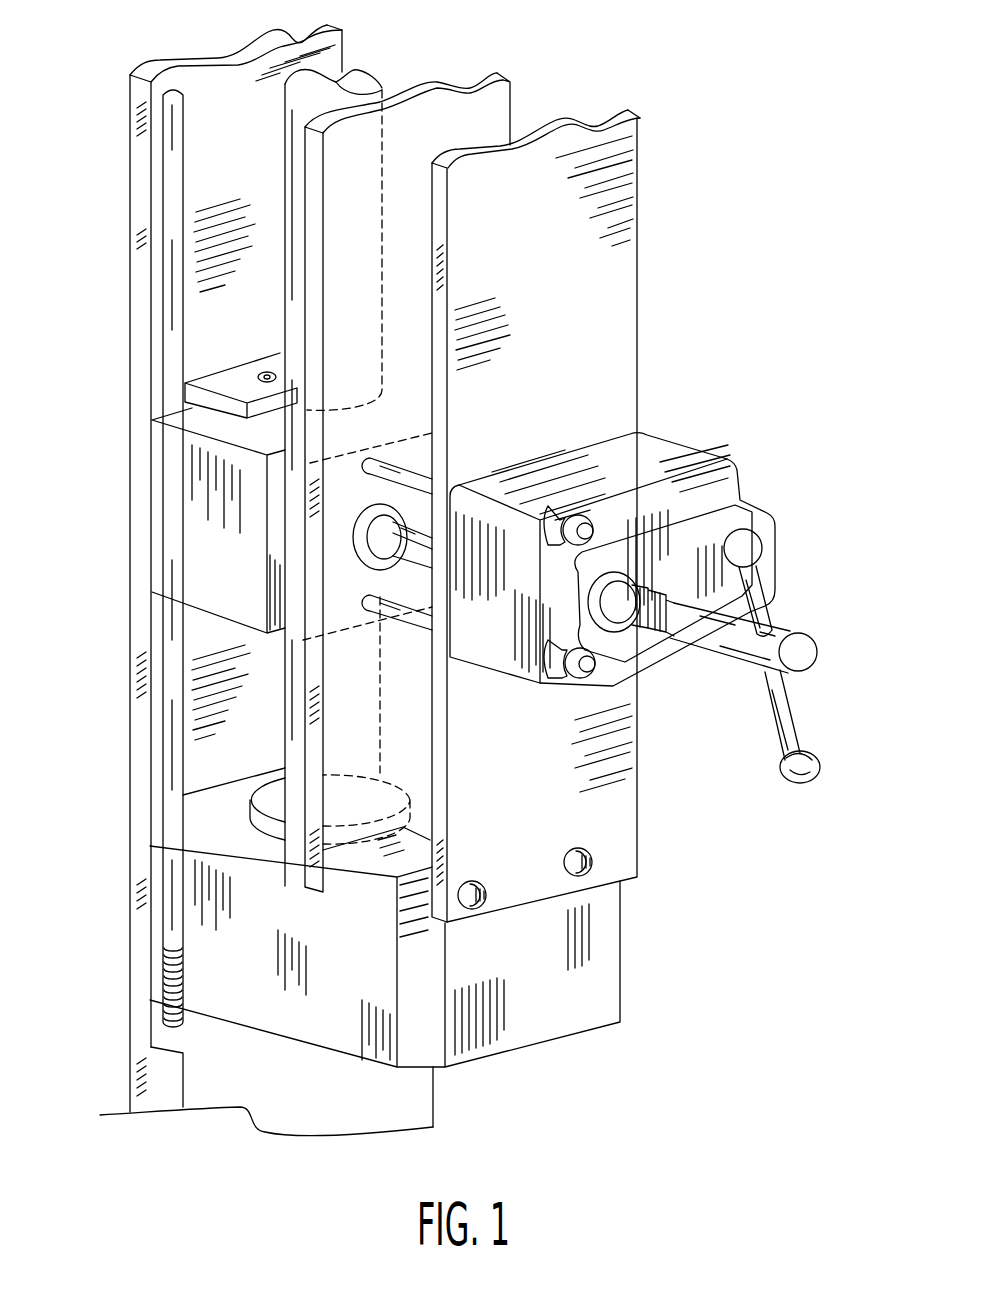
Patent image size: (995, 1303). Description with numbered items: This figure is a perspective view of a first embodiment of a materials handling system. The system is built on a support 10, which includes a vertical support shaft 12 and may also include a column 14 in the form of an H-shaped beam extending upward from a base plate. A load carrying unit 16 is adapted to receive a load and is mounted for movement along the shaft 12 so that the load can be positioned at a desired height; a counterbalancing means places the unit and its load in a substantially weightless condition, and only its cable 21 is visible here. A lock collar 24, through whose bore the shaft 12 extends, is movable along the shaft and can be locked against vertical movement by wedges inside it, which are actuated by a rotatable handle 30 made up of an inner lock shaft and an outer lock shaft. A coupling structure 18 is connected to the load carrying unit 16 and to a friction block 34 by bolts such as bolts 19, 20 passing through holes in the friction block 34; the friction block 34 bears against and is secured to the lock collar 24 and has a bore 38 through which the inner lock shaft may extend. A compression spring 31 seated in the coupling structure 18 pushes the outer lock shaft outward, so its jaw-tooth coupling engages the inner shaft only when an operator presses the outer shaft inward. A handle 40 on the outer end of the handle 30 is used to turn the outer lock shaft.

The support 10 is at (97, 245).
The vertical support shaft 12 is at (357, 80).
The column 14 is at (143, 292).
The load carrying unit 16 is at (672, 281).
The coupling structure 18 is at (643, 453).
The bolt 19 is at (440, 462).
The bolt 20 is at (405, 622).
The cable 21 is at (175, 127).
The lock collar 24 is at (215, 472).
The handle 30 is at (803, 658).
The compression spring 31 is at (643, 592).
The friction block 34 is at (290, 540).
The bore 38 is at (373, 508).
The handle 40 is at (790, 725).